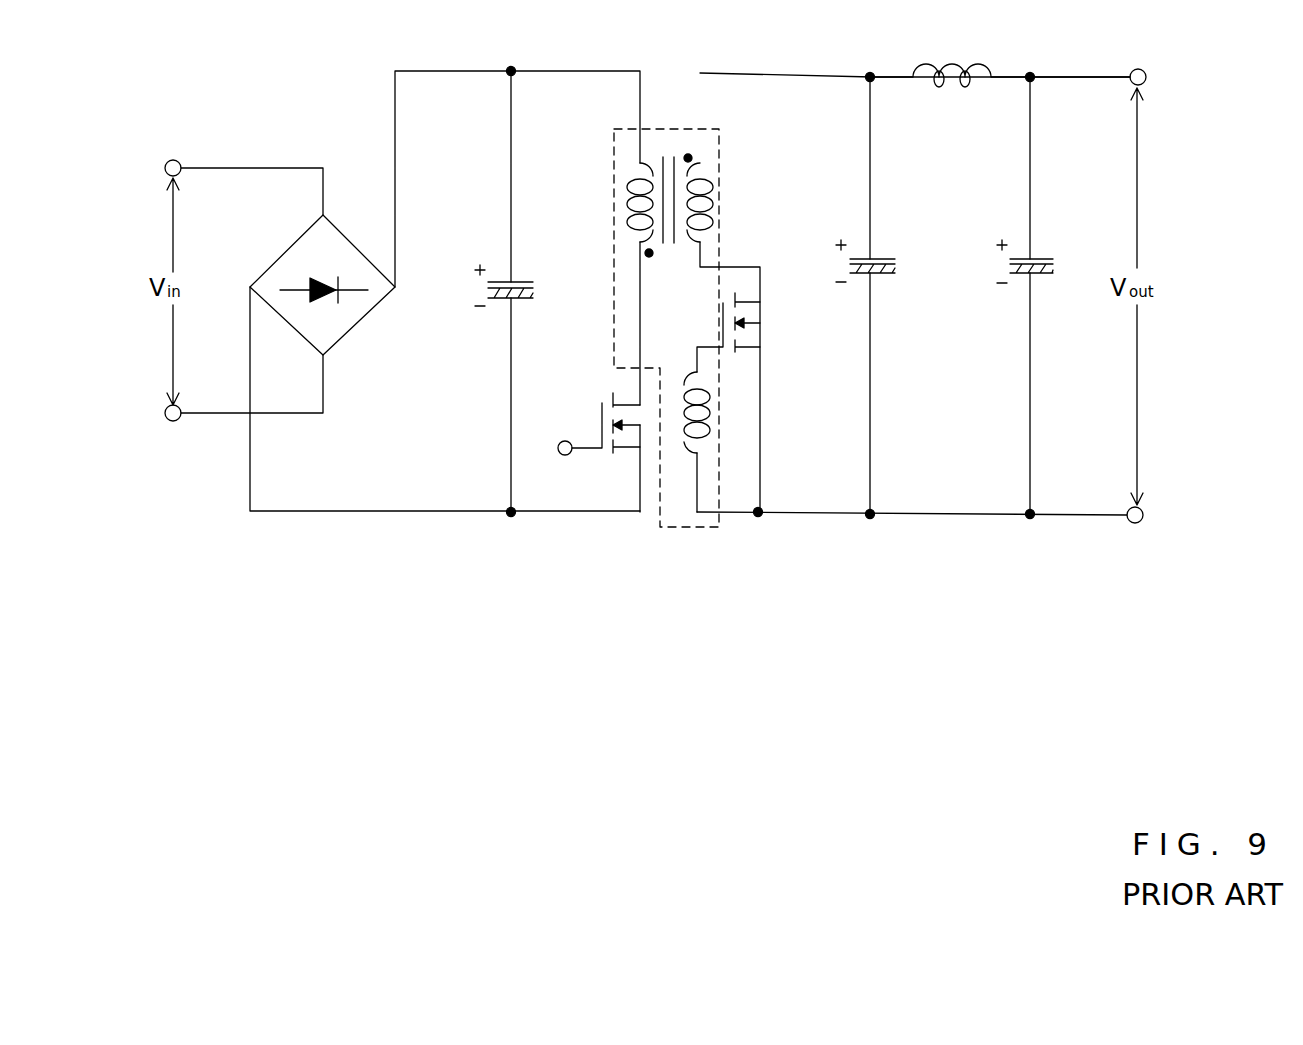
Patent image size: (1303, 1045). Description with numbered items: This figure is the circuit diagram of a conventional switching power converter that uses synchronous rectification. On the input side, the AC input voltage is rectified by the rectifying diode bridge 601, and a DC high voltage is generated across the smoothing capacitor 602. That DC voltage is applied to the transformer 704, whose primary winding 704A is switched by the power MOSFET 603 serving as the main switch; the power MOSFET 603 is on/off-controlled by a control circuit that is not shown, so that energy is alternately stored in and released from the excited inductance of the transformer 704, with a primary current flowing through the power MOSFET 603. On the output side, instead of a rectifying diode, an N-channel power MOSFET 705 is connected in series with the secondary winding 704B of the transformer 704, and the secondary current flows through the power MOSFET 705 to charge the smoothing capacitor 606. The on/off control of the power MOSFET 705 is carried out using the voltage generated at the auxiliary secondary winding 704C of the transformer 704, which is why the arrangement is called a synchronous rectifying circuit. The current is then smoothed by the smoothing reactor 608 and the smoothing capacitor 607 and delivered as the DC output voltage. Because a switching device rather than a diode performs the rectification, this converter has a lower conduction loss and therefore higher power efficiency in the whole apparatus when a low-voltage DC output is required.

The rectifying diode bridge 601 is at (297, 262).
The smoothing capacitor 602 is at (533, 288).
The power MOSFET 603 is at (625, 442).
The transformer 704 is at (672, 128).
The primary winding N1 704A is at (632, 173).
The secondary winding N2 704B is at (710, 168).
The auxiliary secondary winding 704C is at (707, 445).
The power MOSFET 705 is at (760, 318).
The smoothing capacitor 606 is at (901, 263).
The smoothing capacitor 607 is at (996, 268).
The smoothing reactor 608 is at (955, 57).